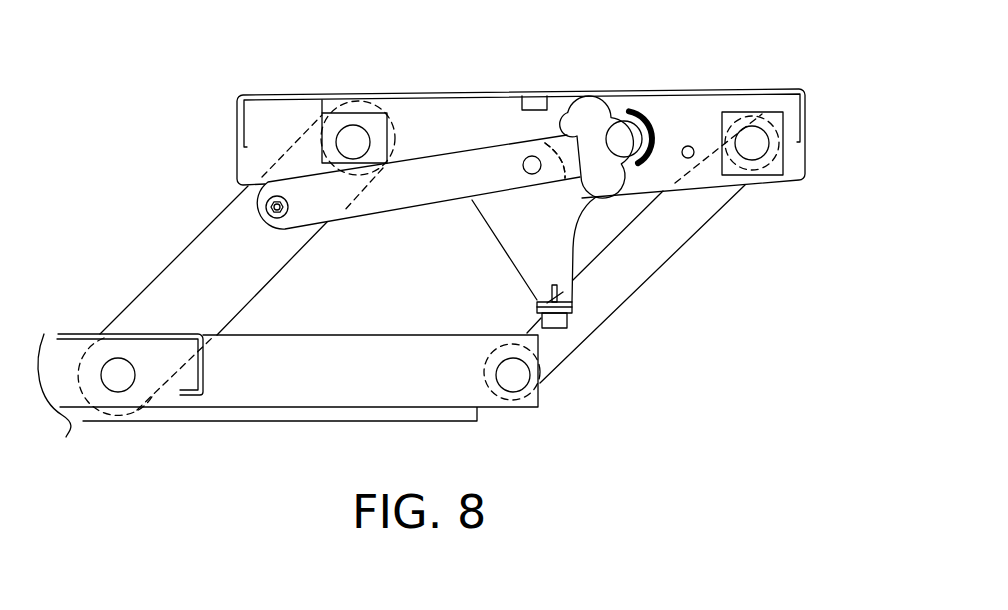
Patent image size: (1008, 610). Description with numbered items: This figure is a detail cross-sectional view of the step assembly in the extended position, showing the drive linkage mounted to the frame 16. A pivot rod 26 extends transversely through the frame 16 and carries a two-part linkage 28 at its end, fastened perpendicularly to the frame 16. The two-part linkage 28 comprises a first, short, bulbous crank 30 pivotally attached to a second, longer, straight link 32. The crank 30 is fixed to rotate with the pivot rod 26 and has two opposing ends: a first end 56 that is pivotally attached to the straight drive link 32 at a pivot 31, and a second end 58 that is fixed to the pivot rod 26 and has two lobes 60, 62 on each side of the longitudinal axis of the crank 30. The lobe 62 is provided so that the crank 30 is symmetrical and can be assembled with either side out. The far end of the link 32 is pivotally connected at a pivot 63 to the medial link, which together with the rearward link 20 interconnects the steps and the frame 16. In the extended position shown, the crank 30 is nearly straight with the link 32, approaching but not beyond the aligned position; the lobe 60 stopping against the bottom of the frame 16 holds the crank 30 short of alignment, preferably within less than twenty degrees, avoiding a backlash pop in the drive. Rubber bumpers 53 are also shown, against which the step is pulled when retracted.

The frame 16 is at (808, 122).
The rearward link 20 is at (703, 216).
The pivot rod 26 is at (627, 135).
The two-part linkage 28 is at (500, 128).
The crank 30 is at (563, 130).
The pivot 31 is at (527, 168).
The straight link 32 is at (470, 152).
The rubber bumpers 53 is at (557, 328).
The first end 56 is at (561, 180).
The second end 58 is at (659, 129).
The lobe 60 is at (588, 108).
The lobe 62 is at (601, 180).
The pivot 63 is at (275, 219).